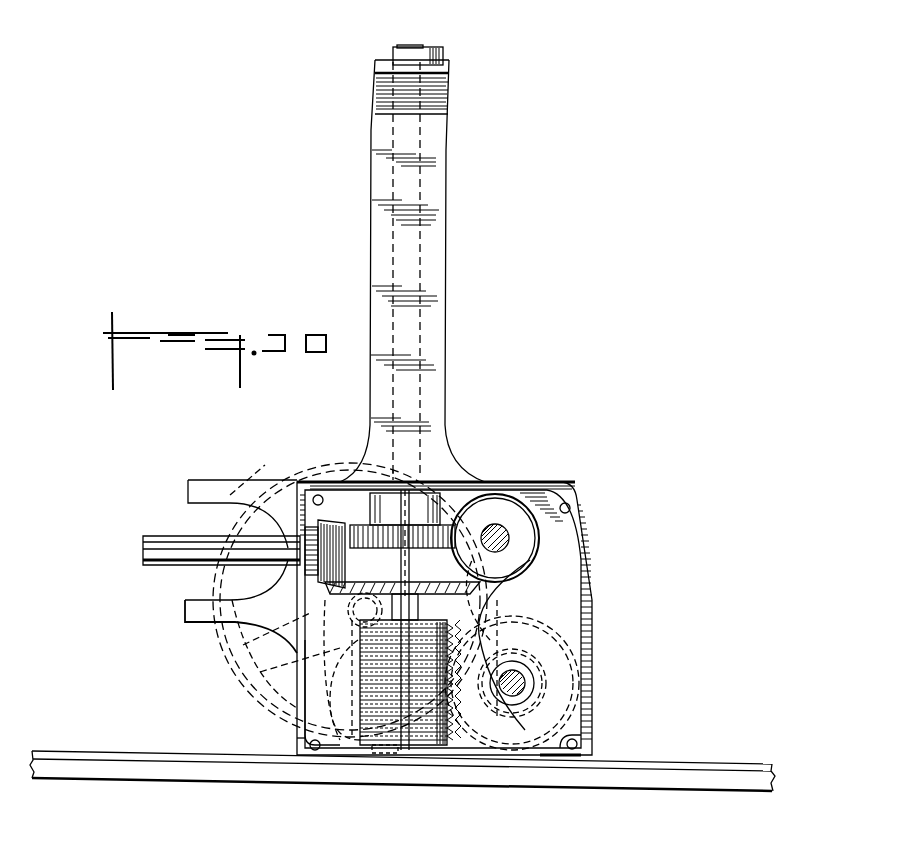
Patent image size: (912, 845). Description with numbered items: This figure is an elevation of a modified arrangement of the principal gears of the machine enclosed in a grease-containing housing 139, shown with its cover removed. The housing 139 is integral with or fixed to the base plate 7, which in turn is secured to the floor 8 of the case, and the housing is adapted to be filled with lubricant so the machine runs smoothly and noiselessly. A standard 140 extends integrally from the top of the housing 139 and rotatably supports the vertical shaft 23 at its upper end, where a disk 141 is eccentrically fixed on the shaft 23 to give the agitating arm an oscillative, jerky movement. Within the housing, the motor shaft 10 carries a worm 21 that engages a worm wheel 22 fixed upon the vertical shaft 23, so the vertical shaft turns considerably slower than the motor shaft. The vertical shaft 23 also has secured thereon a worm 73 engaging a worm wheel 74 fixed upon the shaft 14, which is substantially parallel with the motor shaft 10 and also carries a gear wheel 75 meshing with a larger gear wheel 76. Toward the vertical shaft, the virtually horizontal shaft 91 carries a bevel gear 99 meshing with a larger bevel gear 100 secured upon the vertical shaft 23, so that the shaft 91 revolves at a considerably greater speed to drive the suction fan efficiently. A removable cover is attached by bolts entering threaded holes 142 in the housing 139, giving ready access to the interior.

The base plate 7 is at (76, 756).
The floor 8 is at (102, 768).
The shaft 10 is at (508, 545).
The shaft 14 is at (521, 699).
The worm 21 is at (530, 530).
The worm wheel 22 is at (470, 510).
The vertical shaft 23 is at (425, 330).
The worm 73 is at (362, 652).
The worm wheel 74 is at (522, 626).
The gear wheel 75 is at (532, 662).
The gear wheel 76 is at (236, 673).
The shaft 91 is at (185, 539).
The bevel gear 99 is at (338, 512).
The bevel gear 100 is at (402, 604).
The housing 139 is at (588, 542).
The standard 140 is at (452, 247).
The disk 141 is at (444, 57).
The threaded holes 142 is at (588, 746).